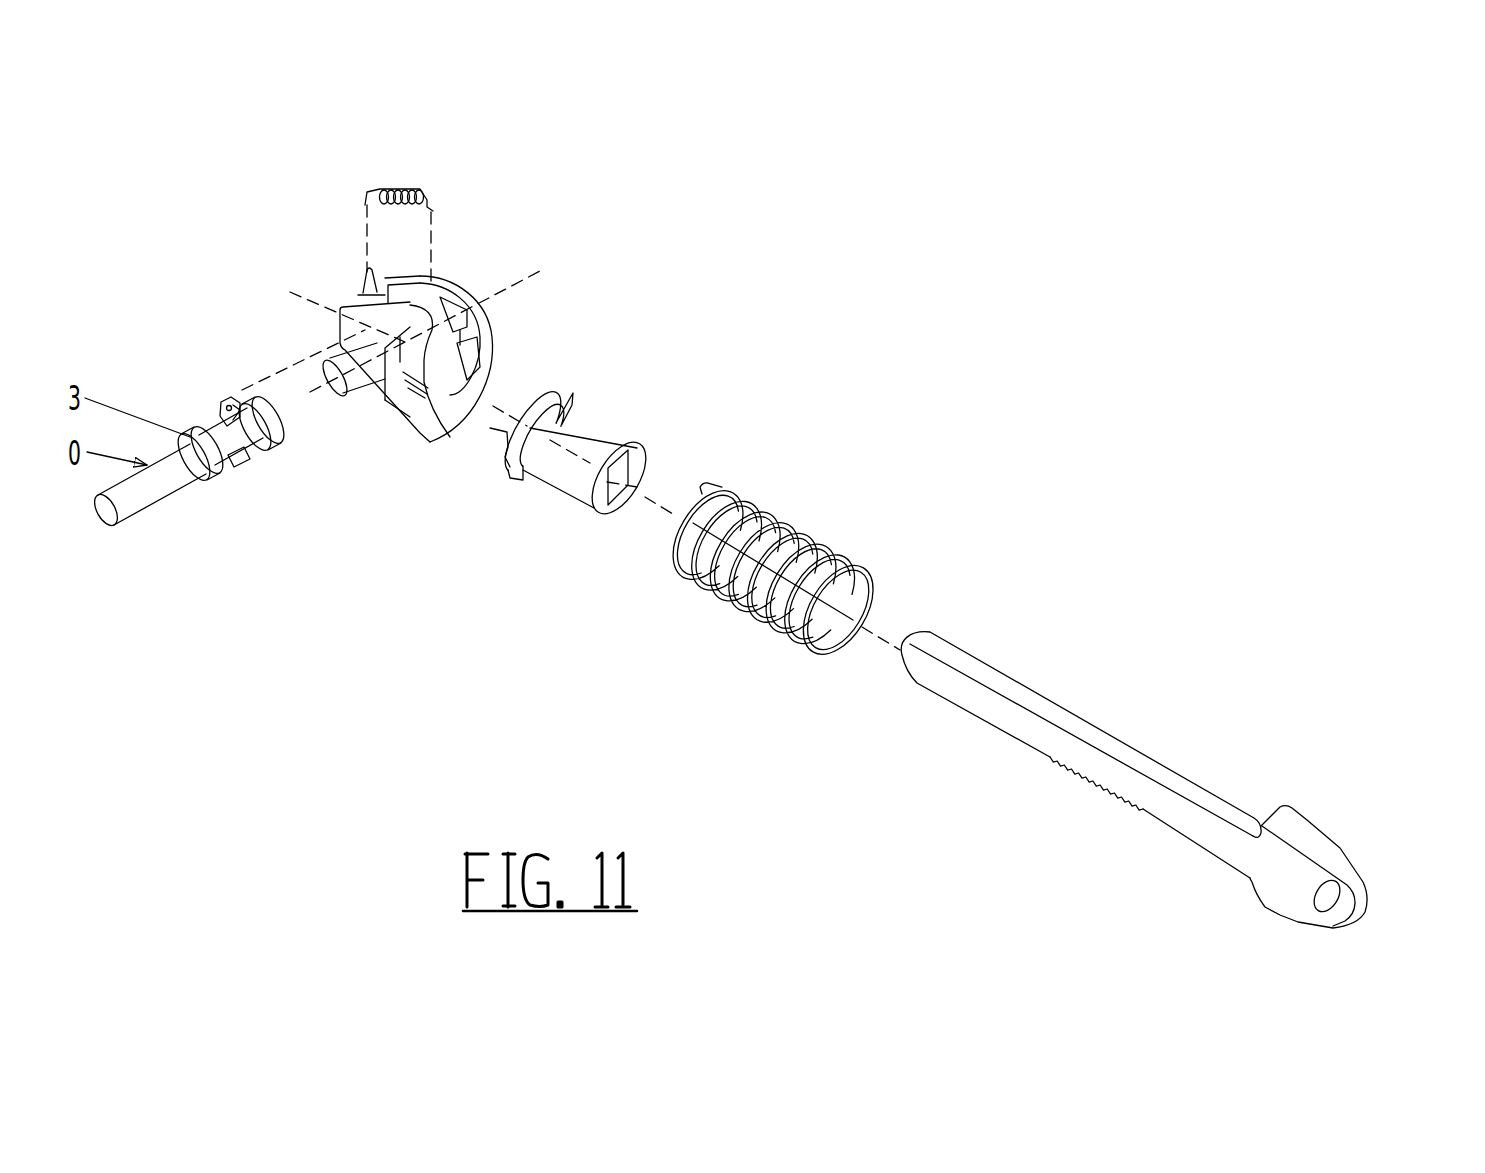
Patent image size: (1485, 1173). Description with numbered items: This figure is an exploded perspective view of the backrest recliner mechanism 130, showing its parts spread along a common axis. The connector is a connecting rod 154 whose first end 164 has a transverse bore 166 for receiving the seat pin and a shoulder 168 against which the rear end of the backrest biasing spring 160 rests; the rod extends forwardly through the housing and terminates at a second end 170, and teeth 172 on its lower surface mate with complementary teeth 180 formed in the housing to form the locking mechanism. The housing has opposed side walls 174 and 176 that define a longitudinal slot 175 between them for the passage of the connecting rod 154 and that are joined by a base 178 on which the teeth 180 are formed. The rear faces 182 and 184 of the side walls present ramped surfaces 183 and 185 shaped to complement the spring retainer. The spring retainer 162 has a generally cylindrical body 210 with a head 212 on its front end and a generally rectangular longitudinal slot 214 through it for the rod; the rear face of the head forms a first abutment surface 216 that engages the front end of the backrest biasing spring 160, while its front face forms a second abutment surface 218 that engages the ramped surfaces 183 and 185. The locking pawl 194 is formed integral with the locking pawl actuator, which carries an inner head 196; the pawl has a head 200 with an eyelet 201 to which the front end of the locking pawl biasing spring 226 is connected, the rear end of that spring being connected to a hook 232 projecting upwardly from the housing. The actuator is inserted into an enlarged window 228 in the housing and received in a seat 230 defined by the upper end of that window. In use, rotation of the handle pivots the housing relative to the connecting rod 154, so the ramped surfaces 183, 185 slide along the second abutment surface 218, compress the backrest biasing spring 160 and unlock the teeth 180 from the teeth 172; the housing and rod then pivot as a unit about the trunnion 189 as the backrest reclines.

The backrest recliner mechanism 130 is at (867, 497).
The connecting rod 154 is at (1148, 753).
The backrest biasing spring 160 is at (781, 628).
The spring retainer 162 is at (603, 422).
The first end 164 is at (1317, 822).
The transverse bore 166 is at (1338, 890).
The shoulder 168 is at (1258, 895).
The second end 170 is at (940, 637).
The teeth 172 is at (1090, 780).
The side wall 174 is at (363, 317).
The longitudinal slot 175 is at (490, 325).
The side wall 176 is at (452, 282).
The base 178 is at (433, 433).
The teeth 180 is at (393, 420).
The rear face 182 is at (422, 423).
The ramped surface 183 is at (443, 420).
The rear face 184 is at (470, 398).
The ramped surface 185 is at (480, 415).
The trunnion 189 is at (338, 340).
The locking pawl 194 is at (223, 418).
The inner head 196 is at (258, 402).
The head 200 is at (232, 404).
The eyelet 201 is at (228, 410).
The cylindrical body 210 is at (640, 452).
The head 212 is at (563, 382).
The longitudinal slot 214 is at (642, 470).
The first abutment surface 216 is at (527, 475).
The second abutment surface 218 is at (490, 430).
The locking pawl biasing spring 226 is at (388, 190).
The window 228 is at (360, 400).
The seat 230 is at (418, 322).
The hook 232 is at (363, 273).